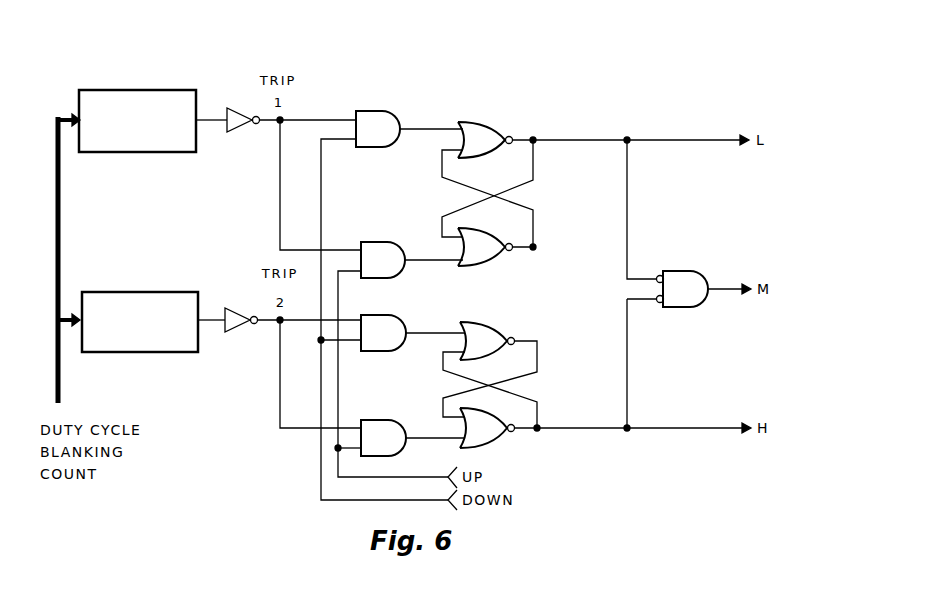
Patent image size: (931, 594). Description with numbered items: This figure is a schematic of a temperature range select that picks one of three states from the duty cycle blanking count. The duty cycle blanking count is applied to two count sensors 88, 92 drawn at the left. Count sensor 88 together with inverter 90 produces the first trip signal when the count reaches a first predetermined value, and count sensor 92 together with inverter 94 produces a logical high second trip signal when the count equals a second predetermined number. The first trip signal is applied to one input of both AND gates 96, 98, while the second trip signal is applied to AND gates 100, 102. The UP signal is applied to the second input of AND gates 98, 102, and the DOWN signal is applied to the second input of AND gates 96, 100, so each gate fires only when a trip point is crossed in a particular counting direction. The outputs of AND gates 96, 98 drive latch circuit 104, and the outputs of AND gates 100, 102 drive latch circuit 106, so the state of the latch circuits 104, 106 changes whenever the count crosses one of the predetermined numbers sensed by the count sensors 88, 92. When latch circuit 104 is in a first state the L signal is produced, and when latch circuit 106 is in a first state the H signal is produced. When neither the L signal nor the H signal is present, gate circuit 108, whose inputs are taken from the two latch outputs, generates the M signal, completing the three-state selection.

The count sensor 88 is at (133, 90).
The inverter 90 is at (236, 106).
The count sensor 92 is at (135, 292).
The inverter 94 is at (228, 306).
The AND gate 96 is at (389, 111).
The AND gate 98 is at (379, 242).
The AND gate 100 is at (424, 300).
The AND gate 102 is at (387, 420).
The latch circuit 104 is at (489, 122).
The latch circuit 106 is at (519, 315).
The gate circuit 108 is at (690, 271).